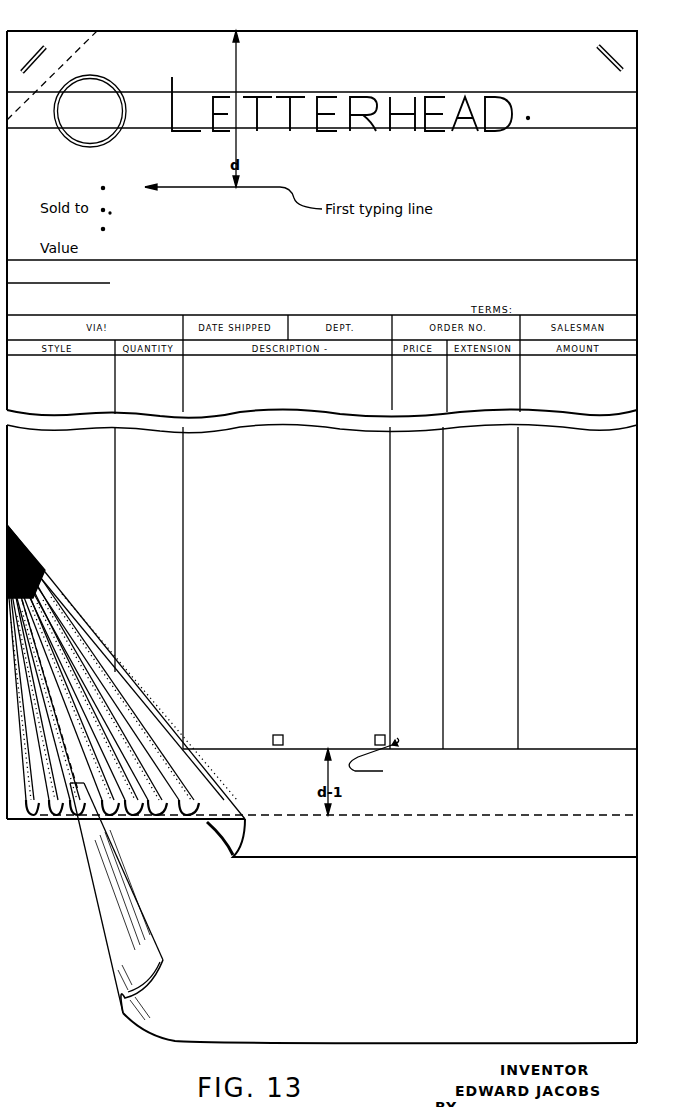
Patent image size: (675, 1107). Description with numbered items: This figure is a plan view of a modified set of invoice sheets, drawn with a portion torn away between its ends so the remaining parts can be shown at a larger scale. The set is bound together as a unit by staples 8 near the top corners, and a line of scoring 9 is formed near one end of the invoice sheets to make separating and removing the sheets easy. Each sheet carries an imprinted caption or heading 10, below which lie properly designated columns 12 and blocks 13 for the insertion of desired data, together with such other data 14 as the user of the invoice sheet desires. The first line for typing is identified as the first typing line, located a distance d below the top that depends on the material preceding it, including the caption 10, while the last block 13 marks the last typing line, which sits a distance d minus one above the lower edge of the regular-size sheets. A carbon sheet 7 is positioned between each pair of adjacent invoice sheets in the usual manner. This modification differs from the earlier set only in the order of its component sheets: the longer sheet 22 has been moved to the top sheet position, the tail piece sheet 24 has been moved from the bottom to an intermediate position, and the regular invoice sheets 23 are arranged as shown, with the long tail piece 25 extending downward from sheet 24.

The carbon sheet 7 is at (210, 822).
The staple 8 is at (32, 63).
The line of scoring 9 is at (68, 68).
The caption or heading 10 is at (489, 98).
The columns 12 is at (311, 376).
The blocks 13 is at (322, 728).
The other data 14 is at (503, 310).
The top sheet 22 is at (148, 708).
The regular invoice sheets 23 is at (28, 822).
The tail piece sheet 24 is at (78, 790).
The tail piece 25 is at (158, 958).